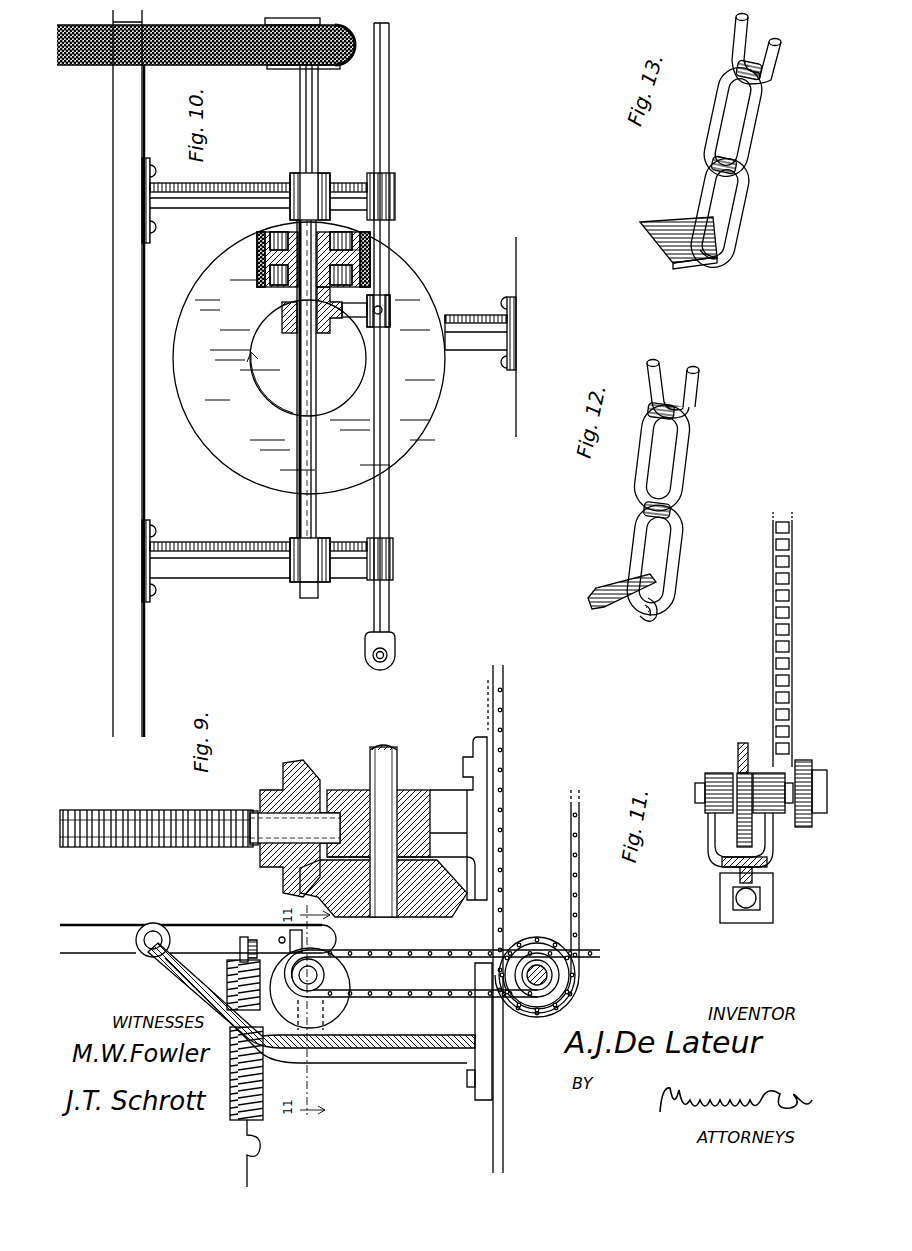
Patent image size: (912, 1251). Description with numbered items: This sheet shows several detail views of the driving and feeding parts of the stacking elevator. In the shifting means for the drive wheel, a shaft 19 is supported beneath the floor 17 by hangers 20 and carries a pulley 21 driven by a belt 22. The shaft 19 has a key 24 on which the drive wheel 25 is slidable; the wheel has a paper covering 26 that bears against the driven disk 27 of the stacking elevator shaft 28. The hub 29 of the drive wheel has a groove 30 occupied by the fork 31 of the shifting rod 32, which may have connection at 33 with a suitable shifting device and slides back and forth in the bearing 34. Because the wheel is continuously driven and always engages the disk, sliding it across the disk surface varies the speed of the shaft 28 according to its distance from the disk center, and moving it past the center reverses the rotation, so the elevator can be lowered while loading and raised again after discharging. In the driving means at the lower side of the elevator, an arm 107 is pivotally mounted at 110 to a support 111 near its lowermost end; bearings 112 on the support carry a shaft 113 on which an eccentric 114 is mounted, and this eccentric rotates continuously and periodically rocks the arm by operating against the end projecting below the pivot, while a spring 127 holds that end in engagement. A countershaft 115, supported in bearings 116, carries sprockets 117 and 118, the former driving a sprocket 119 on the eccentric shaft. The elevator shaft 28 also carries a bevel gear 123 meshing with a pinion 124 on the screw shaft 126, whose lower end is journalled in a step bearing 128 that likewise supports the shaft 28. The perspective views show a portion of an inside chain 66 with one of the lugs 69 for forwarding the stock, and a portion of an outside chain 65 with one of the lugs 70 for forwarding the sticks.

In FIG. 10, the floor 17 is at (136, 456).
In FIG. 10, the shaft 19 is at (305, 100).
In FIG. 10, the hangers 20 is at (247, 183).
In FIG. 10, the pulley 21 is at (330, 68).
In FIG. 10, the belt 22 is at (235, 55).
In FIG. 10, the key 24 is at (296, 500).
In FIG. 10, the drive wheel 25 is at (264, 288).
In FIG. 10, the paper covering 26 is at (373, 252).
In FIG. 10, the driven disk 27 is at (428, 302).
In FIG. 10, the stacking elevator shaft 28 is at (314, 361).
In FIG. 9, the stacking elevator shaft 28 is at (398, 765).
In FIG. 10, the hub 29 is at (283, 297).
In FIG. 10, the groove 30 is at (334, 305).
In FIG. 10, the fork 31 is at (369, 327).
In FIG. 10, the shifting rod 32 is at (390, 483).
In FIG. 10, the connection 33 is at (372, 655).
In FIG. 10, the bearing 34 is at (392, 555).
In FIG. 13, the outside chain 65 is at (740, 200).
In FIG. 12, the inside chain 66 is at (677, 553).
In FIG. 12, the lugs 69 is at (612, 586).
In FIG. 13, the lugs 70 is at (643, 223).
In FIG. 11, the arm 107 is at (746, 743).
In FIG. 9, the arm 107 is at (205, 926).
In FIG. 9, the pivot 110 is at (155, 928).
In FIG. 9, the support 111 is at (378, 1062).
In FIG. 11, the bearings 112 is at (710, 773).
In FIG. 11, the shaft 113 is at (699, 795).
In FIG. 9, the shaft 113 is at (296, 933).
In FIG. 11, the eccentric 114 is at (738, 758).
In FIG. 9, the eccentric 114 is at (280, 942).
In FIG. 9, the countershaft 115 is at (545, 986).
In FIG. 9, the bearings 116 is at (505, 1020).
In FIG. 9, the sprocket 117 is at (556, 940).
In FIG. 9, the sprocket 118 is at (522, 952).
In FIG. 11, the sprocket 119 is at (803, 828).
In FIG. 9, the sprocket 119 is at (326, 980).
In FIG. 9, the bevel gear 123 is at (460, 893).
In FIG. 9, the pinion 124 is at (265, 790).
In FIG. 9, the screw shaft 126 is at (134, 809).
In FIG. 9, the screw shaft 127 is at (230, 1075).
In FIG. 9, the step bearing 128 is at (332, 790).